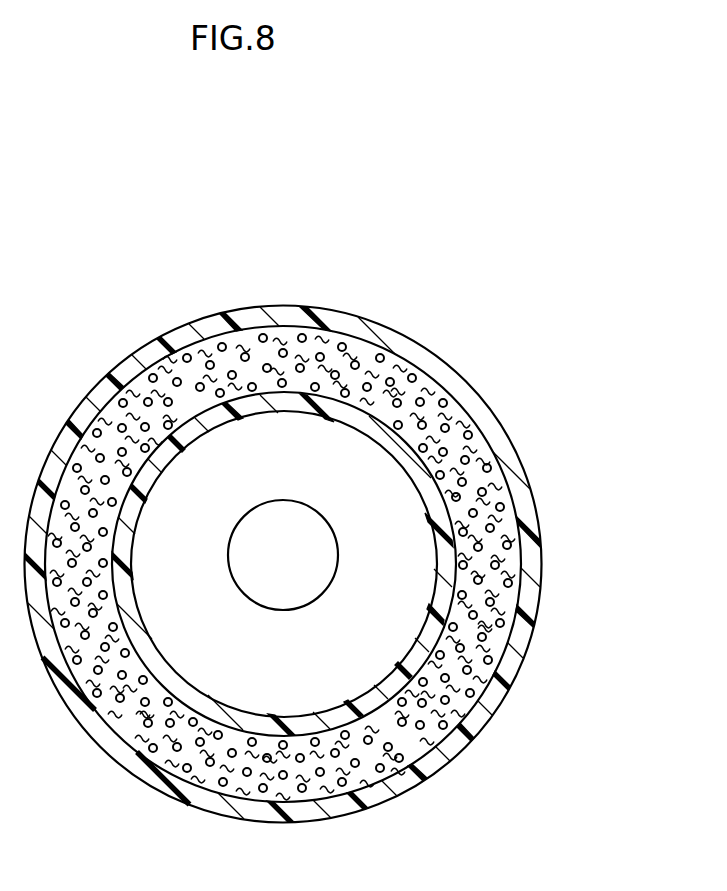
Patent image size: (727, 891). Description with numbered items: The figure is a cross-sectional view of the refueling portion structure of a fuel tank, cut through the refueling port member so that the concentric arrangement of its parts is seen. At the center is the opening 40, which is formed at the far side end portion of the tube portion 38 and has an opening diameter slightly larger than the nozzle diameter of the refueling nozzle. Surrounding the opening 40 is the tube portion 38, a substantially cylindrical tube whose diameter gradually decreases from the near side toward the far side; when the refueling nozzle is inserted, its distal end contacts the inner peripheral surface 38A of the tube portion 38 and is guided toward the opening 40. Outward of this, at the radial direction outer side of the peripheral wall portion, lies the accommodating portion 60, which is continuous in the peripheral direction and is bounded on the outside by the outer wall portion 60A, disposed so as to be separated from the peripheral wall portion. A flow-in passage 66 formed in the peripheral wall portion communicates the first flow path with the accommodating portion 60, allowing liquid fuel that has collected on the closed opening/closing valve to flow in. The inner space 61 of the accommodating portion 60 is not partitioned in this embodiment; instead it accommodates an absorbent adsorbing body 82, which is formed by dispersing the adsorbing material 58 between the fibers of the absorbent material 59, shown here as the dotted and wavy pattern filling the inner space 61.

The outer wall portion 60A is at (540, 595).
The accommodating portion 60 is at (354, 564).
The inner space 61 is at (511, 638).
The absorbent material 59 is at (483, 727).
The adsorbing material 58 is at (462, 753).
The absorbent adsorbing body 82 is at (586, 734).
The inner peripheral surface 38A is at (320, 678).
The tube portion 38 is at (328, 628).
The flow-in passage 66 is at (243, 718).
The opening 40 is at (278, 606).